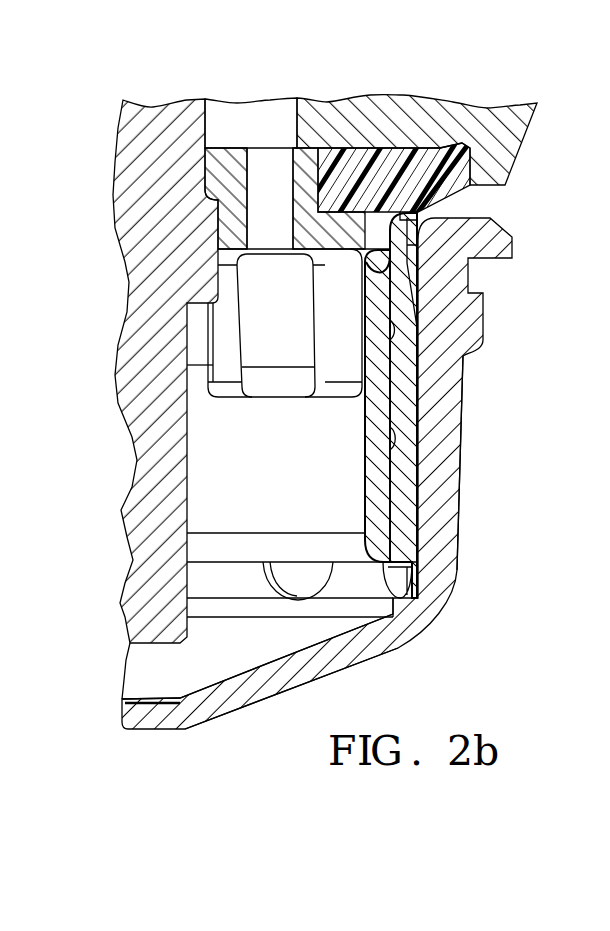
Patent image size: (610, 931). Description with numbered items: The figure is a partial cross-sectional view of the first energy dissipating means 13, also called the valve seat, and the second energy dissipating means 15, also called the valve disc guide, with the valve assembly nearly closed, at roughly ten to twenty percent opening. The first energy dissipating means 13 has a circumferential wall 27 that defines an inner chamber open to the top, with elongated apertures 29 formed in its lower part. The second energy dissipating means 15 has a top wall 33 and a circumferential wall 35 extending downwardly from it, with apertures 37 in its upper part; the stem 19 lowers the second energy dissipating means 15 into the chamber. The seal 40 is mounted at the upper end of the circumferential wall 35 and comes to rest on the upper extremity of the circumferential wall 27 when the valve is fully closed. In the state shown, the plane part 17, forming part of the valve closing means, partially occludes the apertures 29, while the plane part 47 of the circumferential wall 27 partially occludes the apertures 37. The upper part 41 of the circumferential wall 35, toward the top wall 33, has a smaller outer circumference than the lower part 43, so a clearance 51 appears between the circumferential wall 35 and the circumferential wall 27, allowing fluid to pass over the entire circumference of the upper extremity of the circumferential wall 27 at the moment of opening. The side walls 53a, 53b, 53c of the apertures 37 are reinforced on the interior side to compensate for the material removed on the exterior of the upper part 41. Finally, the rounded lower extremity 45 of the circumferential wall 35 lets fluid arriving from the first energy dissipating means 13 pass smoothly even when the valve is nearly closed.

The first energy dissipating means 13 is at (408, 649).
The second energy dissipating means 15 is at (460, 207).
The valve closing means 17 is at (221, 517).
The stem 19 is at (184, 236).
The circumferential wall 27 is at (445, 520).
The apertures 29 is at (319, 591).
The top wall 33 is at (305, 167).
The circumferential wall 35 is at (378, 410).
The apertures 37 is at (292, 336).
The seal 40 is at (400, 152).
The upper part 41 is at (375, 273).
The lower part 43 is at (387, 444).
The rounded lower extremity 45 is at (286, 540).
The plane part 47 is at (472, 340).
The clearance 51 is at (407, 263).
The side wall 53a is at (311, 356).
The side wall 53b is at (242, 273).
The side wall 53c is at (360, 330).